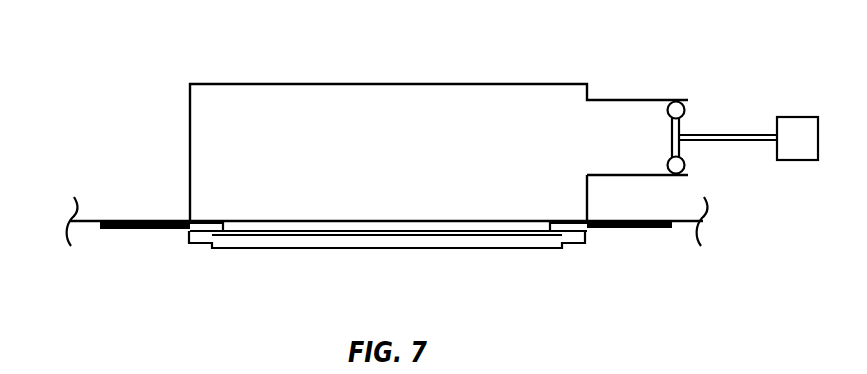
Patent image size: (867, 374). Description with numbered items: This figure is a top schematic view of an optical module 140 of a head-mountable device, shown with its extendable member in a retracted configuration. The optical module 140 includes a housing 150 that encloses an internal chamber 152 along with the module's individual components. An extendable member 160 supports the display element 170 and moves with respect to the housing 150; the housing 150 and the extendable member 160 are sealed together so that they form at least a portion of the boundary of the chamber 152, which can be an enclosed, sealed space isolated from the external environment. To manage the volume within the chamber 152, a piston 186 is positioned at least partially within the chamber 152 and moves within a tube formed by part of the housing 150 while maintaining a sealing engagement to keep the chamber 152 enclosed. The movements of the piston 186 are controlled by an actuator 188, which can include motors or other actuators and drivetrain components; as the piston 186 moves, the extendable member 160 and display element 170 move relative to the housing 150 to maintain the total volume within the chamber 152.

The optical module 140 is at (138, 44).
The housing 150 is at (249, 84).
The chamber 152 is at (213, 171).
The extendable member 160 is at (145, 230).
The display element 170 is at (262, 248).
The piston 186 is at (671, 140).
The actuator 188 is at (797, 117).